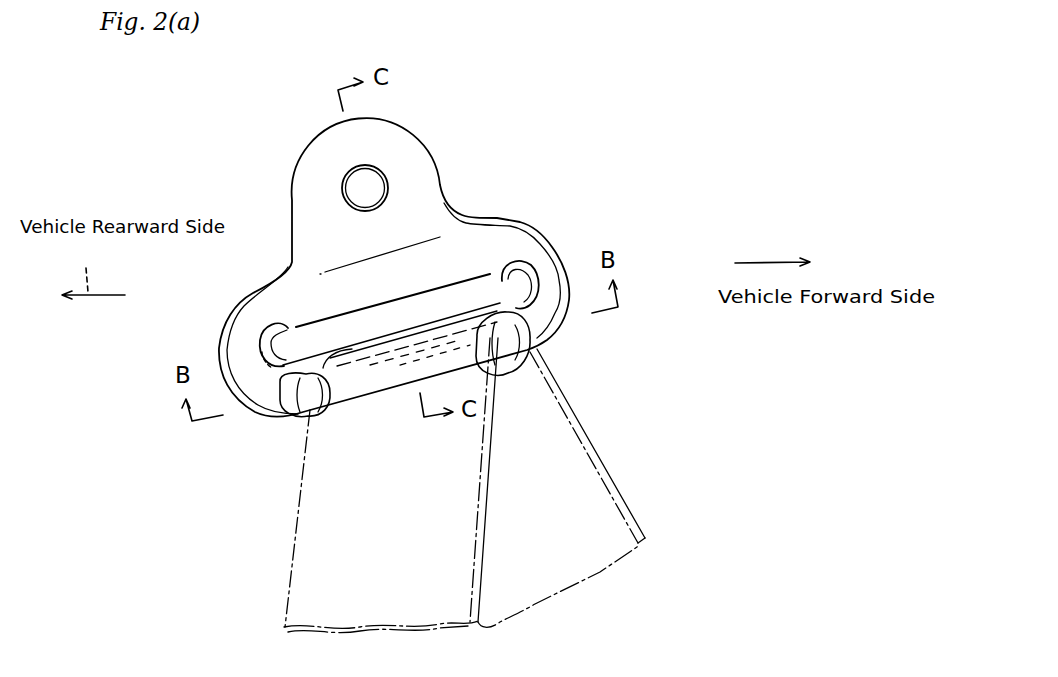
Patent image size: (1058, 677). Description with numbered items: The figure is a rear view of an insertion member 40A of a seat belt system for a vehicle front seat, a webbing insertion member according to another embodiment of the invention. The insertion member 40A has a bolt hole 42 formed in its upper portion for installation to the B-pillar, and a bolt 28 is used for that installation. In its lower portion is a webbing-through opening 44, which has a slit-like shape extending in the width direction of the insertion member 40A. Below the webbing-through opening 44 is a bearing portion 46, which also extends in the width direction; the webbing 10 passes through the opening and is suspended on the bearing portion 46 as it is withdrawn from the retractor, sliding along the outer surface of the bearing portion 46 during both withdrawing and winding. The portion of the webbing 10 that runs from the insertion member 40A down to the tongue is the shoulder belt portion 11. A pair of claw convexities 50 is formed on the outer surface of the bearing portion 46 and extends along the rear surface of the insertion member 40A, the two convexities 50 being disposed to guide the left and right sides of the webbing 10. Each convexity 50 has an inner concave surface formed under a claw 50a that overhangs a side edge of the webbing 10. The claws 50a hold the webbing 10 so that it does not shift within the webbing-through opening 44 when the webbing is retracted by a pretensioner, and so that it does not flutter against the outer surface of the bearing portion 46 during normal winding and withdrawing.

The webbing 10 is at (259, 596).
The shoulder belt portion 11 is at (600, 510).
The bolt 28 is at (366, 178).
The insertion member 40A is at (238, 253).
The bolt hole 42 is at (388, 188).
The webbing-through opening 44 is at (529, 304).
The bearing portion 46 is at (390, 380).
The claw convexity 50 is at (283, 407).
The claw 50a is at (323, 397).